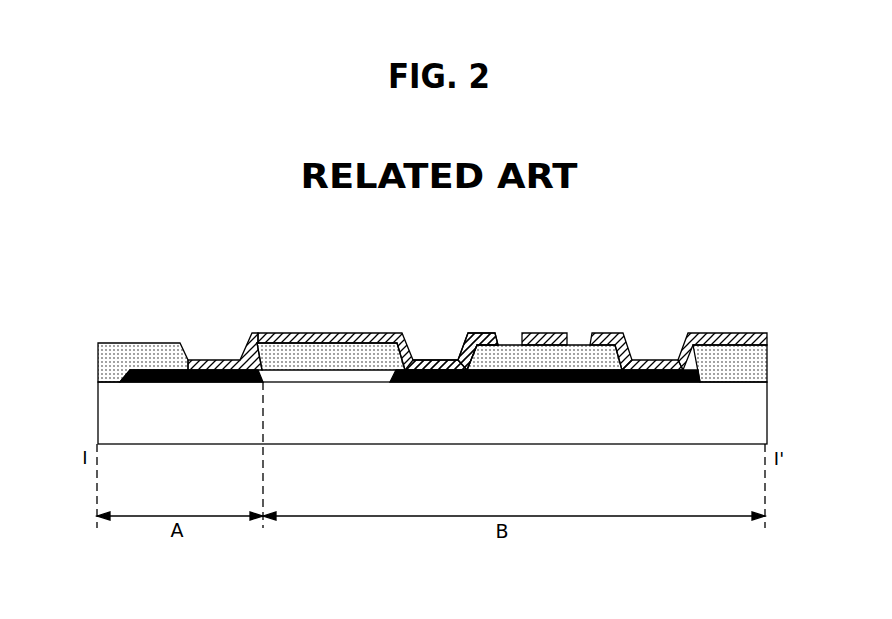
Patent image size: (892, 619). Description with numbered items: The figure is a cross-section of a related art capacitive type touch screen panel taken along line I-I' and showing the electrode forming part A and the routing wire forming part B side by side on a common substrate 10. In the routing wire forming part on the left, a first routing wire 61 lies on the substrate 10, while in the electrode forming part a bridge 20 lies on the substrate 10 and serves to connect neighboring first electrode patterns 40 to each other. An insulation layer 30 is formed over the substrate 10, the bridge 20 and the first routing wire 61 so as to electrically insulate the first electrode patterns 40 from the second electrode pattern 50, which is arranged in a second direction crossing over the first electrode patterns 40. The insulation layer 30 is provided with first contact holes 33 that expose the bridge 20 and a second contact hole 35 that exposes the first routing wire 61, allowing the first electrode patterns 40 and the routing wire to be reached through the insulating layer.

The substrate 10 is at (438, 425).
The bridge 20 is at (562, 383).
The insulation layer 30 is at (317, 352).
The first contact hole 33 is at (440, 357).
The second contact hole 35 is at (222, 358).
The first electrode pattern 40 is at (486, 335).
The second electrode pattern 50 is at (548, 335).
The first routing wire 61 is at (204, 383).